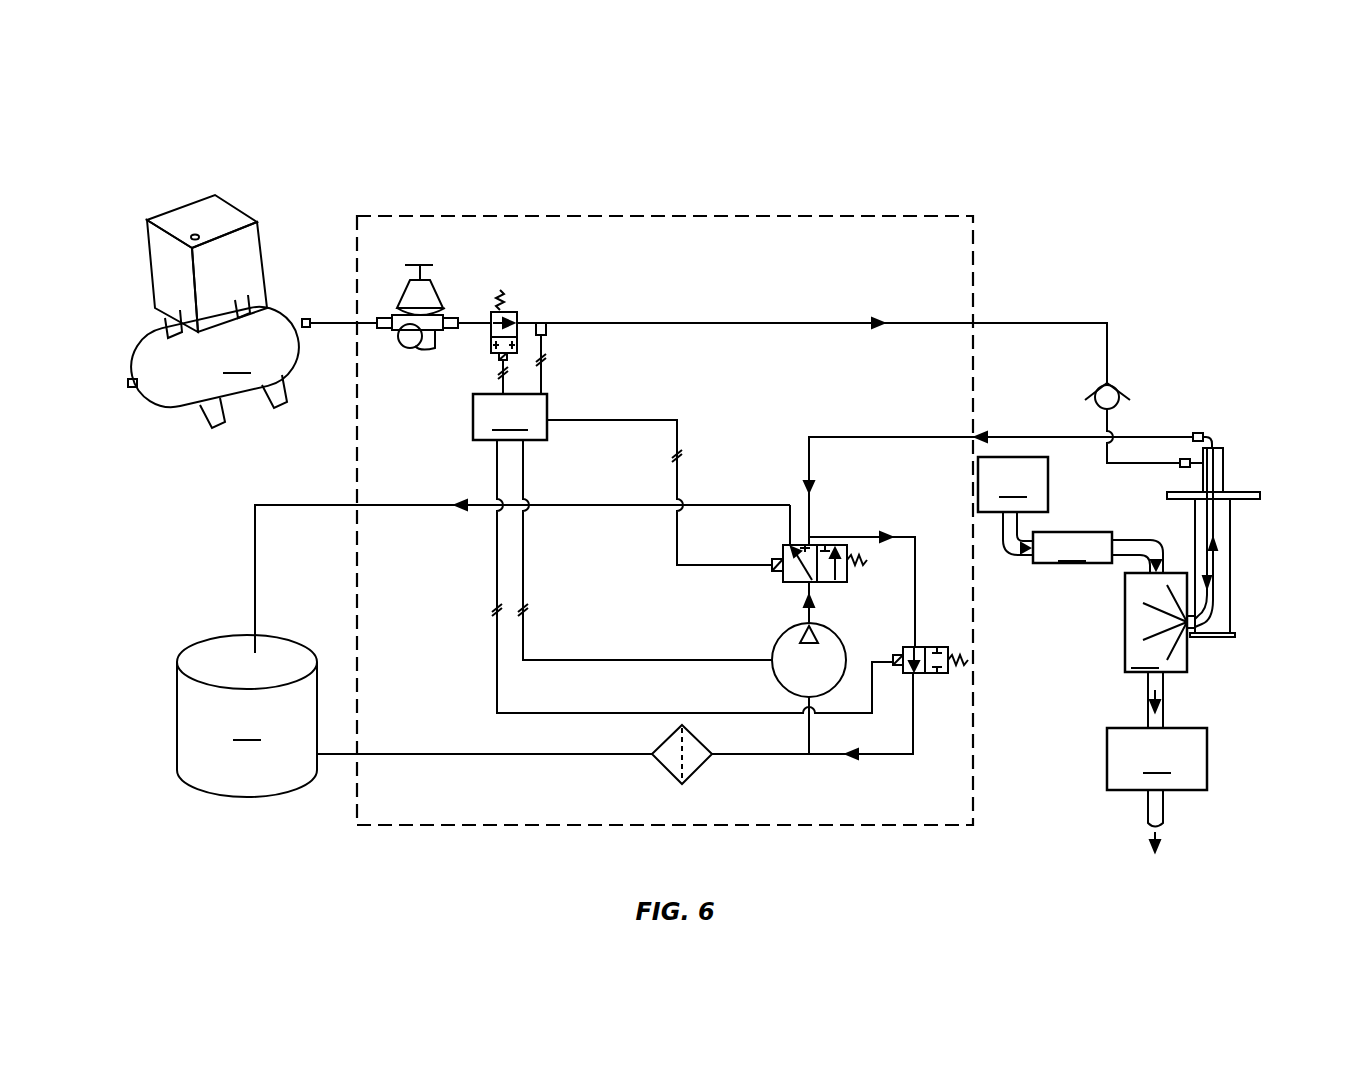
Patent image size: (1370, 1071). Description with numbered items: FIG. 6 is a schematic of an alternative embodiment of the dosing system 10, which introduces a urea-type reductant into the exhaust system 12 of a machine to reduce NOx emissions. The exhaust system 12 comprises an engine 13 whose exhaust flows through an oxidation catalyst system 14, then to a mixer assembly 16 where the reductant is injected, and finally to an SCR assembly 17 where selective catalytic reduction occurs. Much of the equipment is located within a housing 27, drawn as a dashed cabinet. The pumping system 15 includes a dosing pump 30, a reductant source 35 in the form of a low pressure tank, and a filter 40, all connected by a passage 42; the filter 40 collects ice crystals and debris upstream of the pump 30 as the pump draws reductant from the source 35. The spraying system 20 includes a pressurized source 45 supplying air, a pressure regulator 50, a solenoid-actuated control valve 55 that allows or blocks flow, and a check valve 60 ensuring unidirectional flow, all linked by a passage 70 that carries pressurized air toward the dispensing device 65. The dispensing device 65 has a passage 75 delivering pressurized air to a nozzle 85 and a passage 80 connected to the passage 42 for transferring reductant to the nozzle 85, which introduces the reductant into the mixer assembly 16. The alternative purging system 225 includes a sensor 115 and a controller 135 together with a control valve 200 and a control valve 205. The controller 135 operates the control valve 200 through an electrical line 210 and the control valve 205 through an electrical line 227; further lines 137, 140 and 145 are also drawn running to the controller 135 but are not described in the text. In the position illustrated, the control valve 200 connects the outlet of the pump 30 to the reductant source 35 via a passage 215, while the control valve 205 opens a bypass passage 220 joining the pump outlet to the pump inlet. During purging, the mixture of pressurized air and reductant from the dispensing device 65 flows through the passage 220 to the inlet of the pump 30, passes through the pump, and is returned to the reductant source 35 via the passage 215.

The dosing system 10 is at (290, 150).
The exhaust system 12 is at (1076, 612).
The engine 13 is at (1013, 506).
The oxidation catalyst system 14 is at (1098, 552).
The pumping system 15 is at (860, 780).
The mixer assembly 16 is at (1156, 650).
The SCR assembly 17 is at (1157, 790).
The spraying system 20 is at (1105, 265).
The housing 27 is at (860, 216).
The dosing pump 30 is at (833, 652).
The reductant source 35 is at (247, 716).
The filter 40 is at (665, 770).
The passage 42 is at (868, 437).
The pressurized source 45 is at (250, 311).
The pressure regulator 50 is at (430, 300).
The control valve 55 is at (510, 305).
The check valve 60 is at (1125, 400).
The dispensing device 65 is at (1262, 550).
The passage 70 is at (686, 323).
The passage 75 is at (1205, 515).
The passage 80 is at (1225, 518).
The nozzle 85 is at (1197, 630).
The sensor 115 is at (546, 330).
The controller 135 is at (510, 417).
The control line 137 is at (523, 640).
The sensor signal line 140 is at (541, 385).
The valve control line 145 is at (503, 365).
The control valve 200 is at (850, 577).
The control valve 205 is at (930, 675).
The electrical line 210 is at (678, 432).
The passage 215 is at (597, 505).
The passage 220 is at (920, 595).
The purging system 225 is at (648, 390).
The electrical line 227 is at (578, 713).